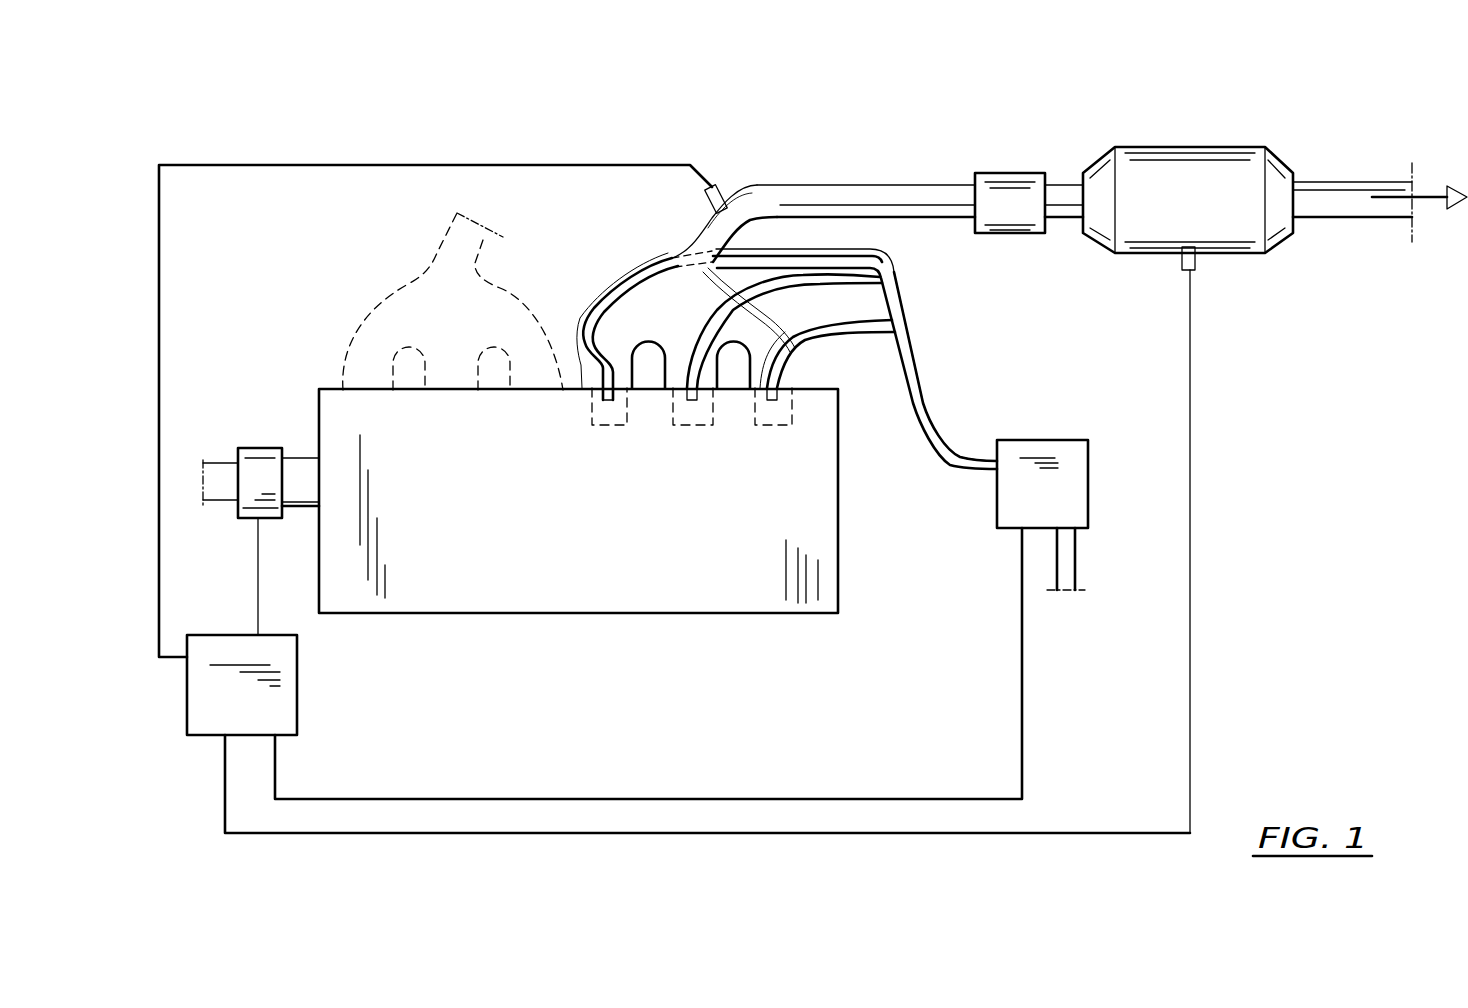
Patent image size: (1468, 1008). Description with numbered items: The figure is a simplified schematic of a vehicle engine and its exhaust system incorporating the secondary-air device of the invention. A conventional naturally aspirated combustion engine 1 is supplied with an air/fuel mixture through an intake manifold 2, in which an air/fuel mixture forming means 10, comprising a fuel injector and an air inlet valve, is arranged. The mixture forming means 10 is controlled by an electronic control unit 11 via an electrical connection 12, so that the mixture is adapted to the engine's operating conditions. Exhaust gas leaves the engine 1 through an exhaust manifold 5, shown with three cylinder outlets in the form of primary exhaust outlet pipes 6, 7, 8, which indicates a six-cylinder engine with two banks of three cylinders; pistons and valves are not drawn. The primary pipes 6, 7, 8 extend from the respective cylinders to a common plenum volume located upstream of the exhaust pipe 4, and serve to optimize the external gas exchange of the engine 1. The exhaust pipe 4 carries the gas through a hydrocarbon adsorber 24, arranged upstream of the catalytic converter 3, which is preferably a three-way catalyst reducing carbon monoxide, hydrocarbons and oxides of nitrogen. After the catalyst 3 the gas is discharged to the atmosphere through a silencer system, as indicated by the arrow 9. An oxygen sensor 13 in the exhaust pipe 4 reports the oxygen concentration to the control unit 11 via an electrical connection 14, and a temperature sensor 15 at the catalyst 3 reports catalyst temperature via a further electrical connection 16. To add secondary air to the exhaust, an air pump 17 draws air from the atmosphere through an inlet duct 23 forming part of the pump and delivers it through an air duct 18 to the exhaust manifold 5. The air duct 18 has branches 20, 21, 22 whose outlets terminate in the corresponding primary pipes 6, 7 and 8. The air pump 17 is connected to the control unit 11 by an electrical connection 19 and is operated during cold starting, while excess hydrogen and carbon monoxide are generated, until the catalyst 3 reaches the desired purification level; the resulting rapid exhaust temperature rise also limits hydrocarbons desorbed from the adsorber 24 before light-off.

The combustion engine 1 is at (828, 573).
The intake manifold 2 is at (300, 465).
The catalytic converter 3 is at (1167, 160).
The exhaust pipe 4 is at (900, 195).
The exhaust manifold 5 is at (642, 315).
The primary exhaust outlet pipe 6 is at (592, 416).
The primary exhaust outlet pipe 7 is at (673, 416).
The primary exhaust outlet pipe 8 is at (755, 416).
The arrow 9 is at (1430, 183).
The air/fuel mixture forming means 10 is at (253, 457).
The electronic control unit 11 is at (290, 655).
The electrical connection 12 is at (258, 583).
The oxygen sensor 13 is at (728, 185).
The electrical connection 14 is at (423, 163).
The temperature sensor 15 is at (1195, 263).
The electrical connection 16 is at (762, 828).
The air pump 17 is at (1048, 445).
The air duct 18 is at (920, 400).
The electrical connection 19 is at (820, 793).
The branch 20 is at (605, 298).
The branch 21 is at (792, 278).
The branch 22 is at (837, 325).
The inlet duct 23 is at (1068, 555).
The hydrocarbon adsorber 24 is at (1010, 183).